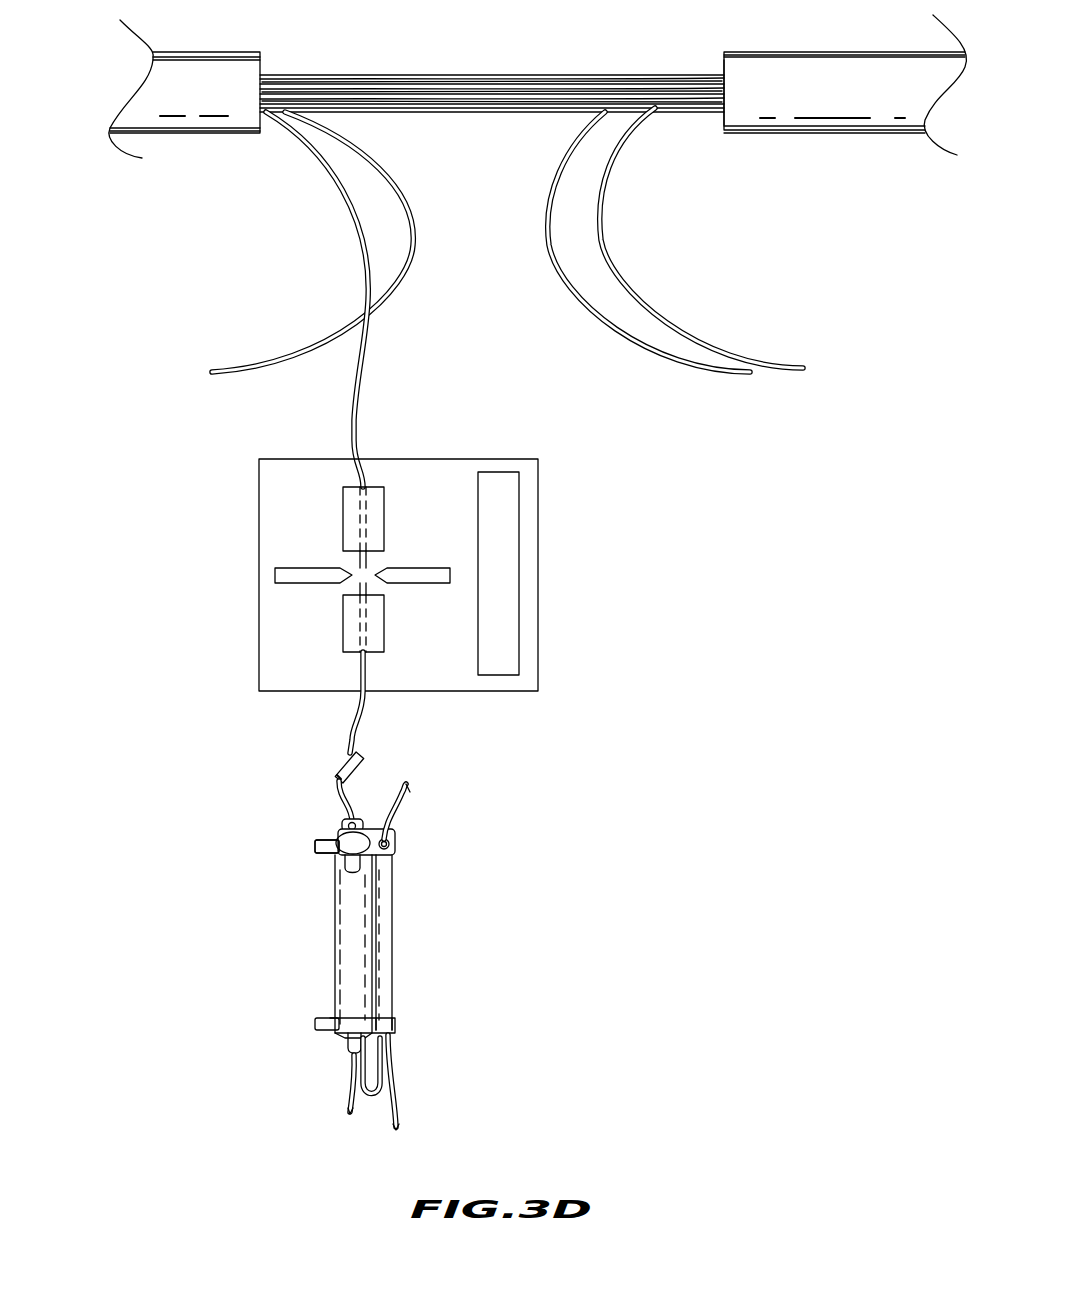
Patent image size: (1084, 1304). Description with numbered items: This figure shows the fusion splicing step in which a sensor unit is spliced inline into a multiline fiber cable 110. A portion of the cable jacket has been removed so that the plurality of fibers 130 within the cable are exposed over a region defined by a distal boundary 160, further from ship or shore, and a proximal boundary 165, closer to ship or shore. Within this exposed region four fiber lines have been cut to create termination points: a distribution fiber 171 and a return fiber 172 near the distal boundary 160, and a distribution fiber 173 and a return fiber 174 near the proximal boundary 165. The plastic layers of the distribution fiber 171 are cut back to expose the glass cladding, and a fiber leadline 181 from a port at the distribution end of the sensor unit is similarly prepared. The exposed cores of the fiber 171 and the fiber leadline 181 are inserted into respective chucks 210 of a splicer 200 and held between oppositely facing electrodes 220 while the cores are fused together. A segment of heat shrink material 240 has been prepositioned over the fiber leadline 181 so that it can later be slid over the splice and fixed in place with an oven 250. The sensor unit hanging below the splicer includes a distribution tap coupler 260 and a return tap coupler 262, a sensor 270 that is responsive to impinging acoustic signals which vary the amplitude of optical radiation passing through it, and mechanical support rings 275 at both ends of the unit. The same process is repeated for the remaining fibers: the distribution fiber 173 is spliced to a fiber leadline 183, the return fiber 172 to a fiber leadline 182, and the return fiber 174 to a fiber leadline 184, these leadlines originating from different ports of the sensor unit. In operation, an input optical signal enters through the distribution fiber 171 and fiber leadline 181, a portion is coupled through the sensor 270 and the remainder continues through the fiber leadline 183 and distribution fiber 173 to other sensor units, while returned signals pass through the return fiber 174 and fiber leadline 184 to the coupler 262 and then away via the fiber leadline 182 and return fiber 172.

The cable 110 is at (823, 68).
The fibers 130 is at (462, 75).
The distal boundary 160 is at (724, 72).
The proximal boundary 165 is at (262, 65).
The distribution fiber 171 is at (357, 205).
The return fiber 172 is at (412, 200).
The distribution fiber 173 is at (550, 225).
The return fiber 174 is at (612, 178).
The fiber leadline 181 is at (340, 826).
The fiber leadline 182 is at (395, 812).
The fiber leadline 183 is at (350, 1090).
The fiber leadline 184 is at (390, 1073).
The splicer 200 is at (465, 691).
The chucks 210 is at (343, 505).
The electrodes 220 is at (425, 568).
The heat shrink material 240 is at (337, 766).
The oven 250 is at (519, 535).
The distribution tap coupler 260 is at (368, 810).
The return tap coupler 262 is at (392, 920).
The sensor 270 is at (355, 970).
The mechanical support rings 275 is at (320, 842).